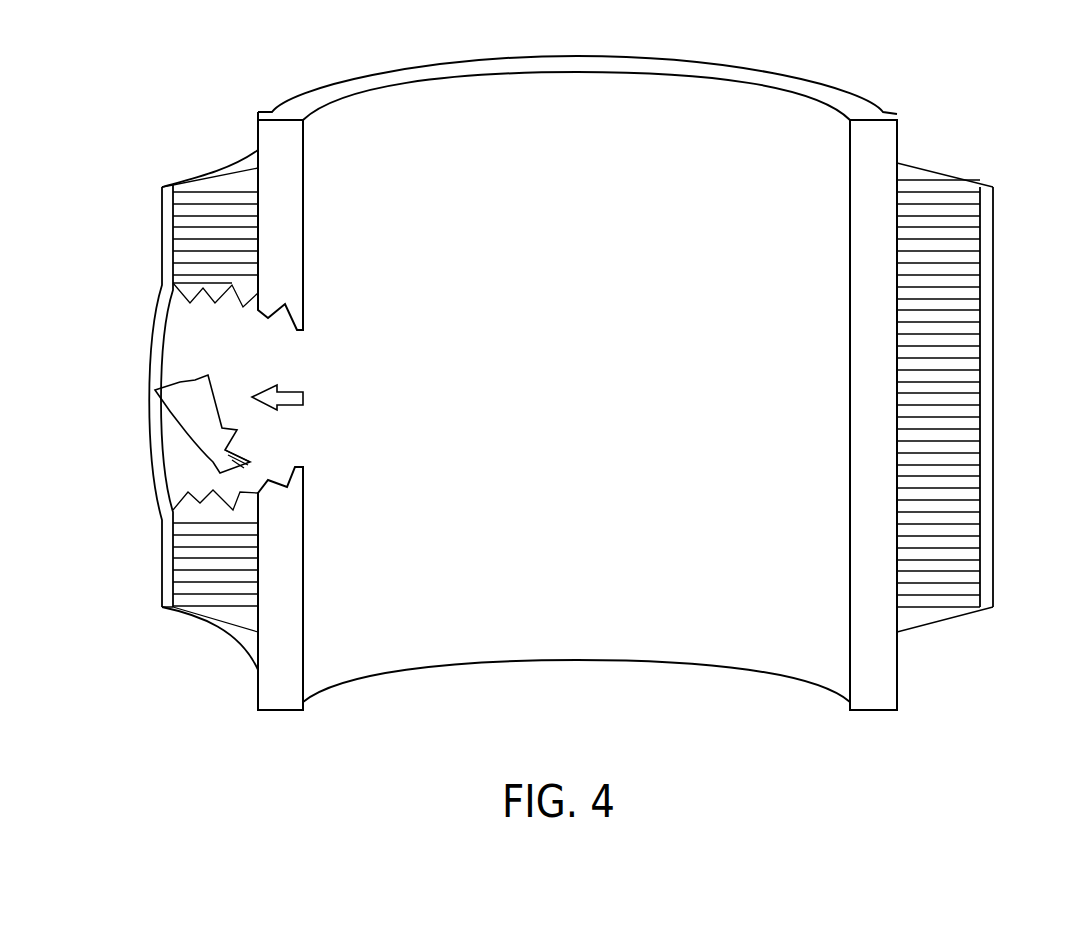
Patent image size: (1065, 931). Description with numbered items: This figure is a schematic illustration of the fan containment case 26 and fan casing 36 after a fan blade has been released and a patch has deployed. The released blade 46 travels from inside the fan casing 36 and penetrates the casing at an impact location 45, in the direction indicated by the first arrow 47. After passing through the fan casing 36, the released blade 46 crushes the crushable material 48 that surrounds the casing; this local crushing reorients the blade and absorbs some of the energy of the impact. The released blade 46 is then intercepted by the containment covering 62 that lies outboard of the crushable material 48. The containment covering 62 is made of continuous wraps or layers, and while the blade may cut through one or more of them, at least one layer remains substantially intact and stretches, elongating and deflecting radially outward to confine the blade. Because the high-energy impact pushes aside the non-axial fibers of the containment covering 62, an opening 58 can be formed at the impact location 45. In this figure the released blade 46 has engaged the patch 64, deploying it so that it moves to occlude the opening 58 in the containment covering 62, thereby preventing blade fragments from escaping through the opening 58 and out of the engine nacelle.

The fan containment case 26 is at (258, 220).
The fan casing 36 is at (828, 90).
The impact location 45 is at (242, 362).
The released blade 46 is at (193, 383).
The first arrow 47 is at (305, 397).
The crushable material 48 is at (227, 190).
The opening 58 is at (150, 388).
The containment covering 62 is at (162, 559).
The patch 64 is at (150, 404).